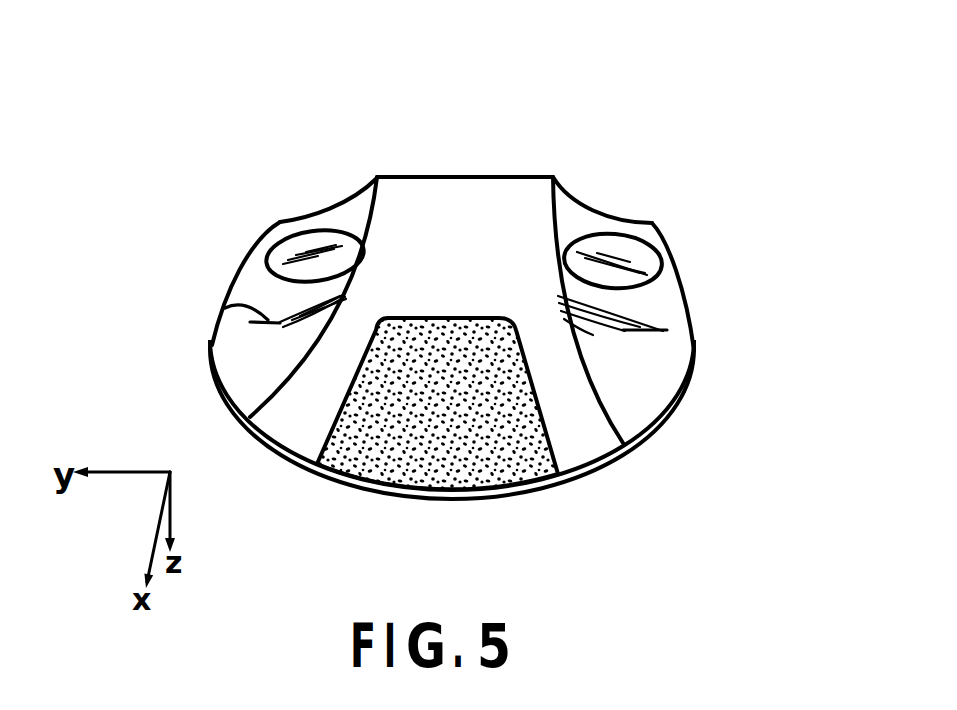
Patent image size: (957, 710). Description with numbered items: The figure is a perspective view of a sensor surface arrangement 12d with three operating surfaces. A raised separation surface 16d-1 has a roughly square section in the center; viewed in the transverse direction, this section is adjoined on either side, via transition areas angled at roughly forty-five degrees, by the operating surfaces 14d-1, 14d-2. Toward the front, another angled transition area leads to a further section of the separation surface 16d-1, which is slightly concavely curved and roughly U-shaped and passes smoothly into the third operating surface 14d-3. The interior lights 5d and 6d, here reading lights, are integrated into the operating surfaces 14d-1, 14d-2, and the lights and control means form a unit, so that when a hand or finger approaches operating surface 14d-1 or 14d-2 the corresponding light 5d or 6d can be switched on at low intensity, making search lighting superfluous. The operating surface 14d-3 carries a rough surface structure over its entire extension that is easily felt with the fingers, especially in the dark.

The sensor surface arrangement 12d is at (403, 134).
The raised separation surface 16d-1 is at (478, 226).
The interior light 5d is at (307, 247).
The interior light 6d is at (617, 243).
The operating surface 14d-1 is at (210, 317).
The operating surface 14d-2 is at (643, 345).
The third operating surface 14d-3 is at (460, 410).